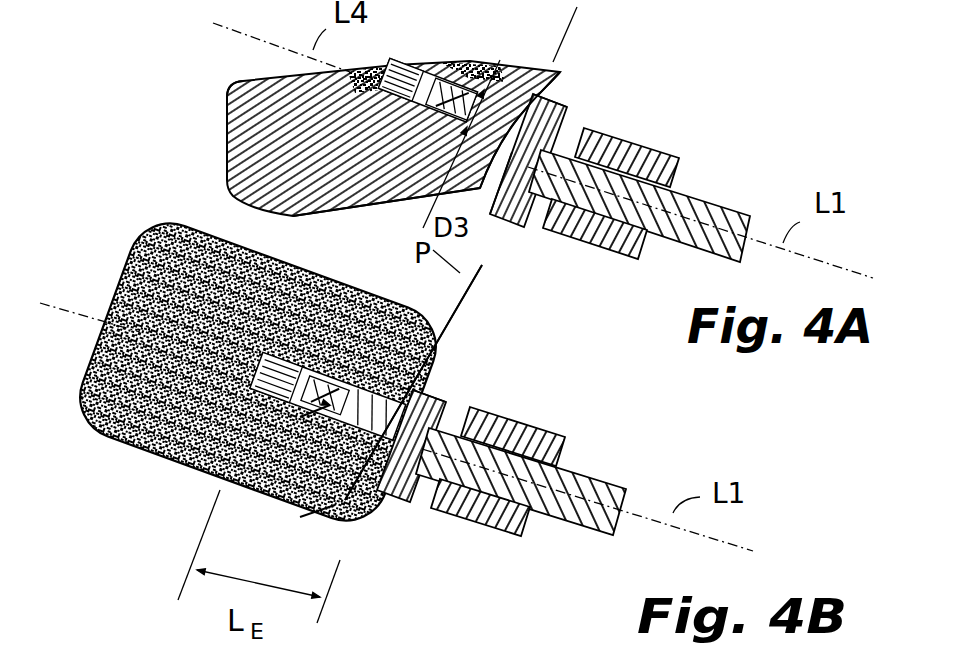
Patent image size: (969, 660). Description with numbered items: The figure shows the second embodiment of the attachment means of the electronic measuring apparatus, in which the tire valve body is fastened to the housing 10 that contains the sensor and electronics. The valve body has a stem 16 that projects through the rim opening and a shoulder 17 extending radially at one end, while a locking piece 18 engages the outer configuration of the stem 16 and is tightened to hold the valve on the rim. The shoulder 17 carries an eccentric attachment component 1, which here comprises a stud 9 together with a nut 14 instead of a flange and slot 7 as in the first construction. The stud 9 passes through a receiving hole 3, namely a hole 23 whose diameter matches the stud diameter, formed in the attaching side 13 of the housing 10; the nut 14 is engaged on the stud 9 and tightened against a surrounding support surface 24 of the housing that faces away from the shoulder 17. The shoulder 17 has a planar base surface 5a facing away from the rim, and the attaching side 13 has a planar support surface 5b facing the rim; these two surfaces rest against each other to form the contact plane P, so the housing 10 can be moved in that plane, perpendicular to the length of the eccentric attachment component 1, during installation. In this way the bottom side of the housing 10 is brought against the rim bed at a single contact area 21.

In FIG. 4A, the eccentric attachment component 1 is at (436, 133).
In FIG. 4A, the receiving hole 3 is at (520, 85).
In FIG. 4B, the receiving hole 3 is at (425, 379).
In FIG. 4A, the planar base surface 5a is at (490, 200).
In FIG. 4B, the planar base surface 5a is at (320, 520).
In FIG. 4A, the planar support surface 5b is at (515, 157).
In FIG. 4A, the slot 7 is at (460, 70).
In FIG. 4B, the slot 7 is at (170, 477).
In FIG. 4A, the stud 9 is at (510, 110).
In FIG. 4B, the stud 9 is at (293, 513).
In FIG. 4A, the housing 10 is at (265, 155).
In FIG. 4B, the housing 10 is at (85, 425).
In FIG. 4A, the attaching side 13 is at (552, 100).
In FIG. 4B, the attaching side 13 is at (435, 377).
In FIG. 4A, the nut 14 is at (429, 70).
In FIG. 4B, the nut 14 is at (297, 376).
In FIG. 4A, the stem 16 is at (712, 213).
In FIG. 4B, the stem 16 is at (583, 482).
In FIG. 4B, the shoulder 17 is at (400, 497).
In FIG. 4A, the locking piece 18 is at (642, 256).
In FIG. 4B, the locking piece 18 is at (560, 440).
In FIG. 4A, the contact area 21 is at (315, 214).
In FIG. 4B, the hole 23 is at (413, 382).
In FIG. 4B, the support surface 24 is at (259, 556).